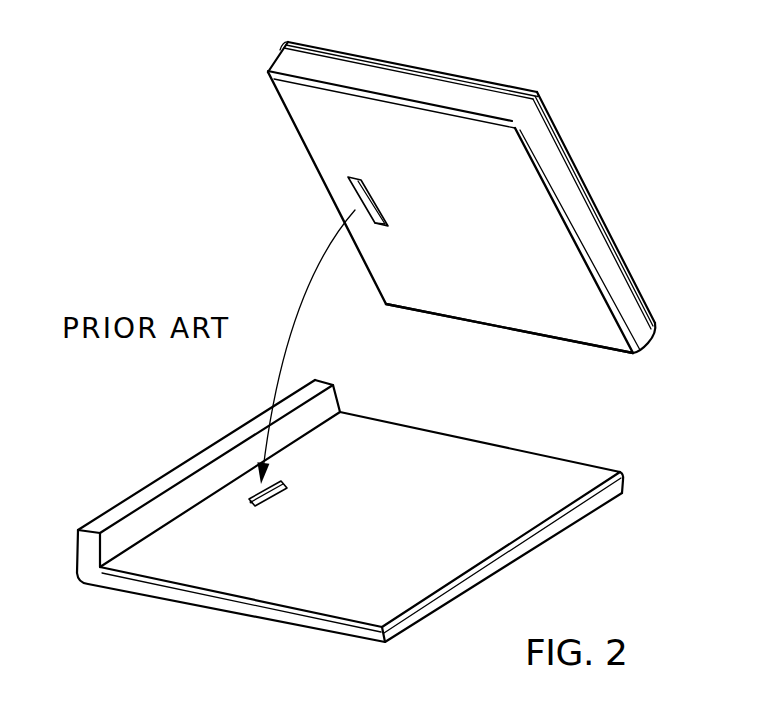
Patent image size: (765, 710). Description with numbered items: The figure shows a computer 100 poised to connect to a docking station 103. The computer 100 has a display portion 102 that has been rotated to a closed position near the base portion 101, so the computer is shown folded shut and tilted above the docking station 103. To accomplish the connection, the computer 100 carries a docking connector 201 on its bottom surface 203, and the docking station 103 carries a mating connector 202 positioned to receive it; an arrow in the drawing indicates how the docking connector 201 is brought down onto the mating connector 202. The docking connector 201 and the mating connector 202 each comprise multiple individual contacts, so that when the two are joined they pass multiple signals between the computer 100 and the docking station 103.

The computer 100 is at (280, 196).
The base portion 101 is at (286, 64).
The display portion 102 is at (563, 152).
The docking station 103 is at (203, 460).
The docking connector 201 is at (373, 193).
The mating connector 202 is at (268, 497).
The bottom surface 203 is at (573, 318).